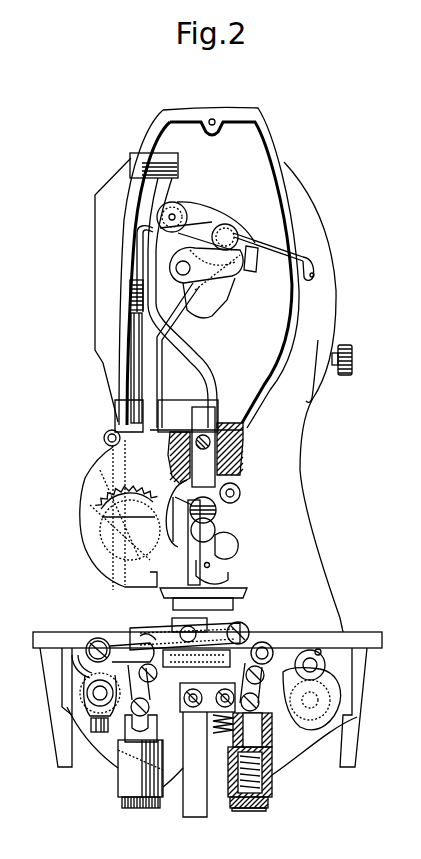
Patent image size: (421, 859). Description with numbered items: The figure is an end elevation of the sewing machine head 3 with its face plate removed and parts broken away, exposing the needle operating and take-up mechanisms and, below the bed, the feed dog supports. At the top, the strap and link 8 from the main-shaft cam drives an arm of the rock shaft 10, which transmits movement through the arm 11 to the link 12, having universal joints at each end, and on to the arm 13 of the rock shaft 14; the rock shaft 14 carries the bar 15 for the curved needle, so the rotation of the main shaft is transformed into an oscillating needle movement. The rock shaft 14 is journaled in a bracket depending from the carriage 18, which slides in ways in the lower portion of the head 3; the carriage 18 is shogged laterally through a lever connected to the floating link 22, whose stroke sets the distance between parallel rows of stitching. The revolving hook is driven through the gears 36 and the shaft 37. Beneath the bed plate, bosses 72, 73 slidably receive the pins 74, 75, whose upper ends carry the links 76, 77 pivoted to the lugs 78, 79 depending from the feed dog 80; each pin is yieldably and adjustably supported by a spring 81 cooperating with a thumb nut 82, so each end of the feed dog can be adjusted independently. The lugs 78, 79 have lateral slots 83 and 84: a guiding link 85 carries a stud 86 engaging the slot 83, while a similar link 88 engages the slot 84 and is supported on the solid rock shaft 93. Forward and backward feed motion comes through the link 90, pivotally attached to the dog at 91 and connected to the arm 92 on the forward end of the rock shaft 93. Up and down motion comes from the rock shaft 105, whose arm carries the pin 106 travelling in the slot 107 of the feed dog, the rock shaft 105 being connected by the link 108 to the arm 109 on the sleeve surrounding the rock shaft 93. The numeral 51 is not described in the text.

The head 3 is at (190, 136).
The strap and link 8 is at (163, 358).
The rock shaft 10 is at (104, 436).
The arm 11 is at (190, 505).
The link 12 is at (239, 503).
The arm 13 is at (230, 514).
The rock shaft 14 is at (214, 525).
The bar 15 is at (234, 542).
The carriage 18 is at (222, 476).
The floating link 22 is at (145, 232).
The gears 36 is at (103, 510).
The shaft 37 is at (131, 378).
The spring 51 is at (213, 731).
The boss 72 is at (272, 780).
The boss 73 is at (124, 783).
The sliding pin 74 is at (268, 737).
The sliding pin 75 is at (131, 723).
The link 76 is at (292, 722).
The link 77 is at (148, 707).
The lug 78 is at (290, 668).
The lug 79 is at (105, 636).
The feed dog 80 is at (182, 620).
The spring 81 is at (268, 800).
The thumb nut 82 is at (130, 810).
The lateral slot 83 is at (268, 642).
The lateral slot 84 is at (143, 636).
The guiding link 85 is at (320, 650).
The stud 86 is at (256, 656).
The link 88 is at (118, 645).
The link 90 is at (168, 630).
The pivotal attachment 91 is at (248, 627).
The arm 92 is at (86, 675).
The solid rock shaft 93 is at (99, 695).
The rock shaft 105 is at (242, 598).
The pin 106 is at (232, 588).
The slot 107 is at (163, 622).
The link 108 is at (183, 657).
The arm 109 is at (72, 663).